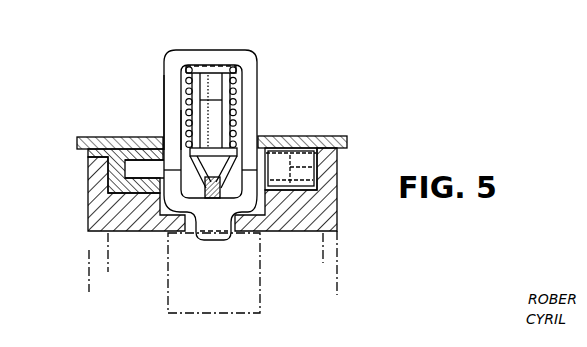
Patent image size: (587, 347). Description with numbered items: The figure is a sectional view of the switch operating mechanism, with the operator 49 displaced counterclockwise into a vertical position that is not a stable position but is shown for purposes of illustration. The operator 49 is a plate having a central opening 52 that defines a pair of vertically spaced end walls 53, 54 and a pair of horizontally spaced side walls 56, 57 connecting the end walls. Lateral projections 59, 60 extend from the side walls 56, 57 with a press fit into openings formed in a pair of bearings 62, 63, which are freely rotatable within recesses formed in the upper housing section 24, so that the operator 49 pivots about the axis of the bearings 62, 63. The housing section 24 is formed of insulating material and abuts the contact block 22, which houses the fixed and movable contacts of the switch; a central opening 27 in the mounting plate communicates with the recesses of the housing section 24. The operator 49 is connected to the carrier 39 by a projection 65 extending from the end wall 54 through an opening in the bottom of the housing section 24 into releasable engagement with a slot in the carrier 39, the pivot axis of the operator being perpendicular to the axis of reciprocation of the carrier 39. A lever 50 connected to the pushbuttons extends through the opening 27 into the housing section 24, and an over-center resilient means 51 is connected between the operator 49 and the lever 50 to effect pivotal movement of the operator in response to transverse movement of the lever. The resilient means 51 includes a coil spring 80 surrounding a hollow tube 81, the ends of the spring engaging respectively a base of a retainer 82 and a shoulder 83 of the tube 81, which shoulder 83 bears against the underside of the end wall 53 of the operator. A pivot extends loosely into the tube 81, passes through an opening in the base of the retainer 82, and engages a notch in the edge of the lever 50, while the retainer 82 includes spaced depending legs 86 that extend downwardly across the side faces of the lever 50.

The contact block 22 is at (340, 272).
The upper housing section 24 is at (338, 209).
The central opening 27 is at (270, 136).
The carrier 39 is at (262, 302).
The operator 49 is at (221, 150).
The lever 50 is at (200, 195).
The over-center resilient means 51 is at (178, 78).
The central opening 52 is at (240, 102).
The end wall 53 is at (219, 50).
The end wall 54 is at (183, 228).
The side wall 56 is at (168, 102).
The side wall 57 is at (258, 72).
The lateral projection 59 is at (137, 169).
The lateral projection 60 is at (338, 165).
The bearing 62 is at (99, 152).
The bearing 63 is at (324, 126).
The projection 65 is at (213, 242).
The coil spring 80 is at (192, 91).
The hollow tube 81 is at (233, 87).
The retainer 82 is at (181, 142).
The shoulder 83 is at (184, 64).
The depending legs 86 is at (182, 170).